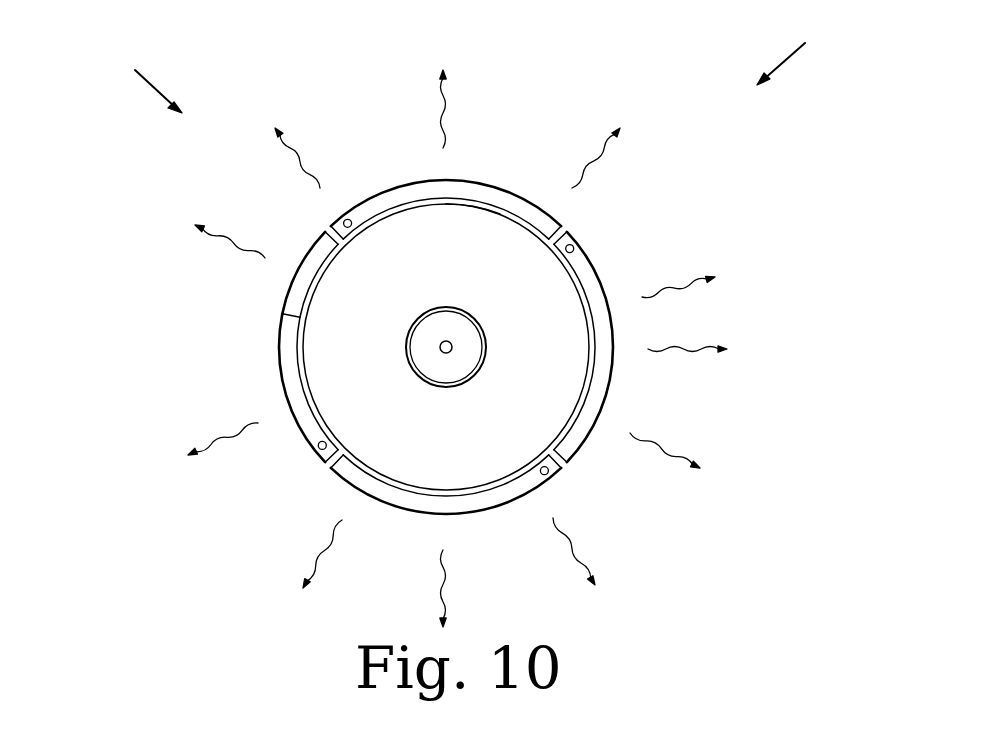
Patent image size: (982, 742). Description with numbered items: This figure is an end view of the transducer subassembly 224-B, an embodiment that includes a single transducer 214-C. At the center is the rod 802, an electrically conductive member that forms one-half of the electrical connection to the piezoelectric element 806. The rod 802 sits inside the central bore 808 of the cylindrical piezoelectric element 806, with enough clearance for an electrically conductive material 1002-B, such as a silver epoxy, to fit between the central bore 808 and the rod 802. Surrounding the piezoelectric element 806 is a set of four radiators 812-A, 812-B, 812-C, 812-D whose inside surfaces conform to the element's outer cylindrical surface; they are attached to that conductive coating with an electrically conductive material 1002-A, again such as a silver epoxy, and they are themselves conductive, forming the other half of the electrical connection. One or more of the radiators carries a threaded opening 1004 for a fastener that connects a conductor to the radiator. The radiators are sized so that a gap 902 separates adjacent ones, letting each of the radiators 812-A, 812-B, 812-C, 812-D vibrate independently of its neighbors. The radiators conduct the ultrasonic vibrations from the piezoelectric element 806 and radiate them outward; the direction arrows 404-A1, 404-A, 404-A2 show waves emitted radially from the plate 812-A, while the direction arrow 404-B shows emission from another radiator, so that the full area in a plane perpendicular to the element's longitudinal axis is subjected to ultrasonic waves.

The transducer subassembly 224-B is at (117, 77).
The transducer 214-C is at (819, 51).
The direction arrow 404-A is at (441, 100).
The direction arrow 404-A1 is at (294, 146).
The direction arrow 404-A2 is at (605, 140).
The direction arrow 404-B is at (693, 348).
The radiator 812-A is at (478, 183).
The radiator 812-B is at (279, 352).
The radiator 812-C is at (608, 393).
The radiator 812-D is at (405, 511).
The gap 902 is at (328, 232).
The threaded opening 1004 is at (579, 250).
The piezoelectric element 806 is at (413, 275).
The rod 802 is at (406, 347).
The central bore 808 is at (487, 347).
The electrically conductive material 1002-A is at (291, 314).
The electrically conductive material 1002-B is at (443, 384).